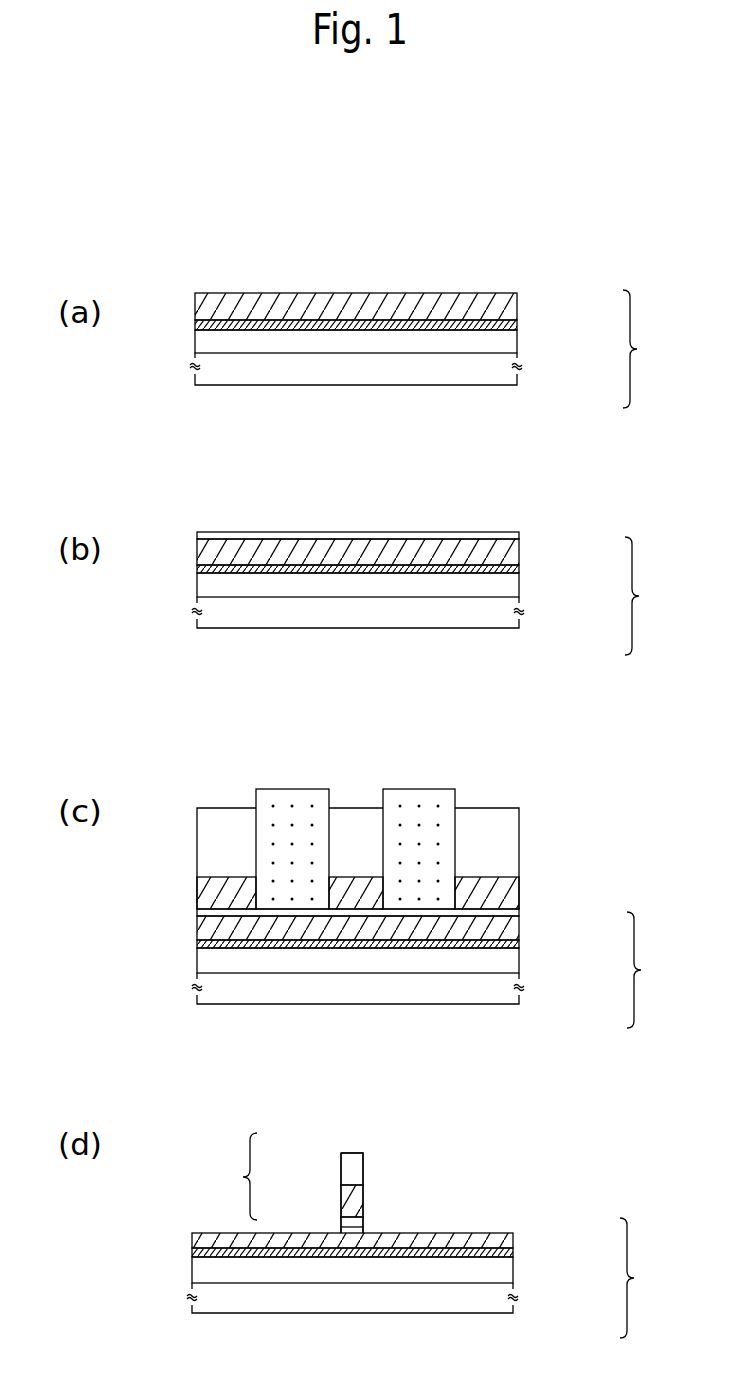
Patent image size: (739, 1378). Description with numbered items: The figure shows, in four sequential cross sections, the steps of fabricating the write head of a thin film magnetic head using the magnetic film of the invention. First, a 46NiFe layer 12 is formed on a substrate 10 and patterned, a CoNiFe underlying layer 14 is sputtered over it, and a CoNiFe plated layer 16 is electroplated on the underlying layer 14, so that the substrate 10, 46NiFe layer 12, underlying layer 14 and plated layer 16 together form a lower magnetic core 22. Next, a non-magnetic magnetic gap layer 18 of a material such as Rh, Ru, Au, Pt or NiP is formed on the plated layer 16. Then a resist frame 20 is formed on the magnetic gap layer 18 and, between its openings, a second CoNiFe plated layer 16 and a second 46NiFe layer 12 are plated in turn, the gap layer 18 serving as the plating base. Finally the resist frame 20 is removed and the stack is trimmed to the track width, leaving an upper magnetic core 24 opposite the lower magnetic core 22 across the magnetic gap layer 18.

The substrate 10 is at (517, 378).
The 46NiFe layer 12 is at (505, 338).
The CoNiFe underlying layer 14 is at (517, 325).
The CoNiFe plated layer 16 is at (517, 305).
The magnetic gap layer 18 is at (519, 535).
The resist frame 20 is at (417, 793).
The lower magnetic core 22 is at (650, 814).
The upper magnetic core 24 is at (280, 1183).